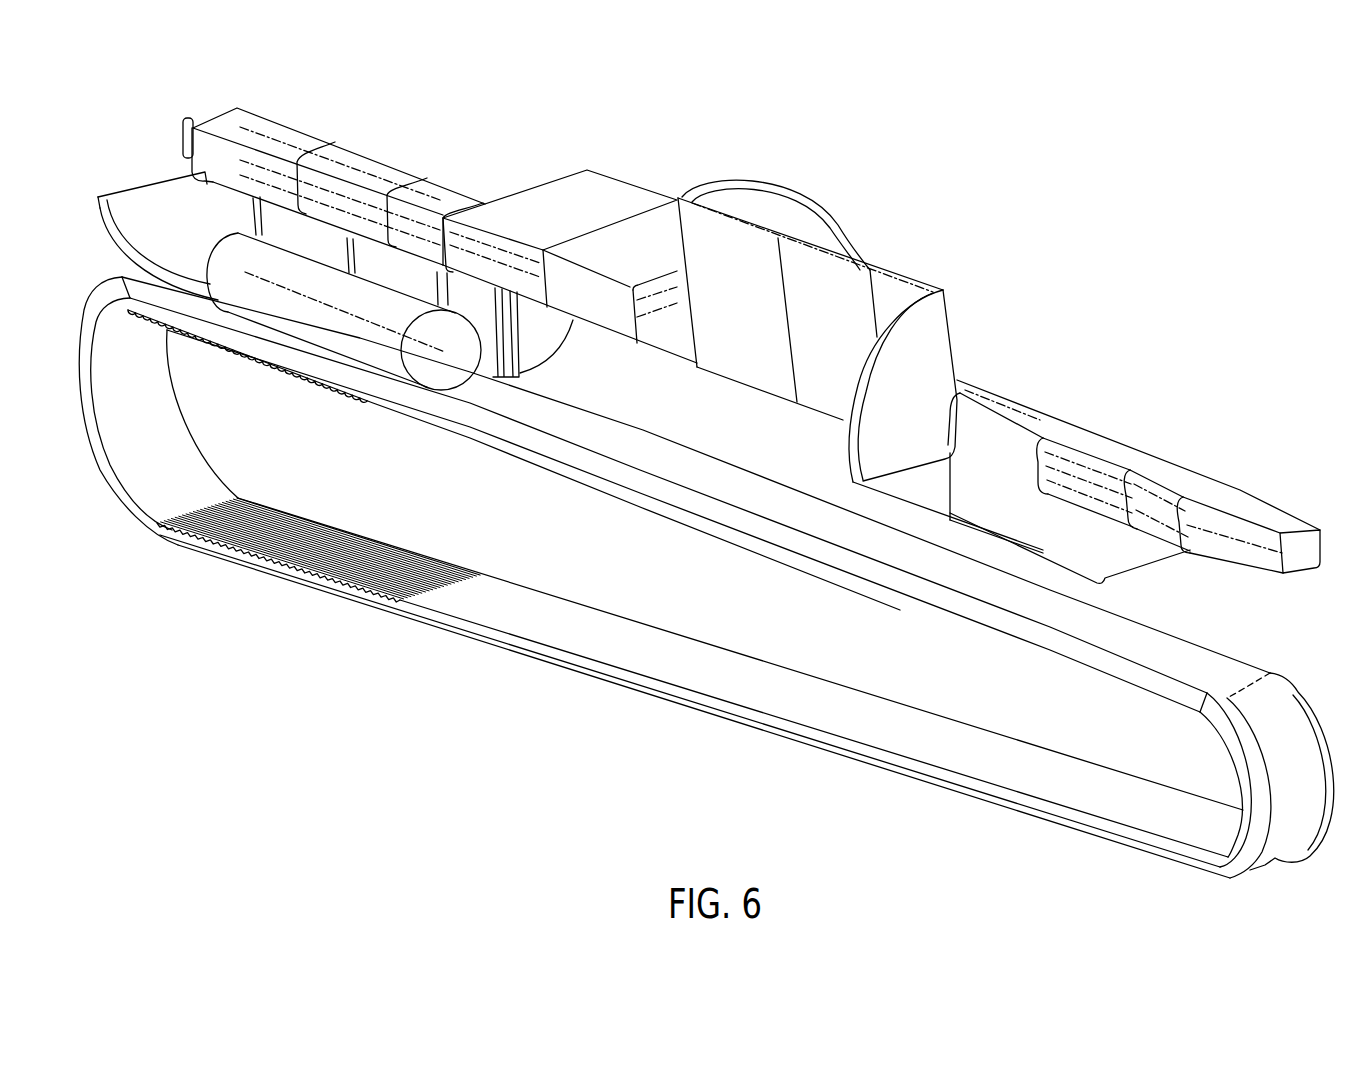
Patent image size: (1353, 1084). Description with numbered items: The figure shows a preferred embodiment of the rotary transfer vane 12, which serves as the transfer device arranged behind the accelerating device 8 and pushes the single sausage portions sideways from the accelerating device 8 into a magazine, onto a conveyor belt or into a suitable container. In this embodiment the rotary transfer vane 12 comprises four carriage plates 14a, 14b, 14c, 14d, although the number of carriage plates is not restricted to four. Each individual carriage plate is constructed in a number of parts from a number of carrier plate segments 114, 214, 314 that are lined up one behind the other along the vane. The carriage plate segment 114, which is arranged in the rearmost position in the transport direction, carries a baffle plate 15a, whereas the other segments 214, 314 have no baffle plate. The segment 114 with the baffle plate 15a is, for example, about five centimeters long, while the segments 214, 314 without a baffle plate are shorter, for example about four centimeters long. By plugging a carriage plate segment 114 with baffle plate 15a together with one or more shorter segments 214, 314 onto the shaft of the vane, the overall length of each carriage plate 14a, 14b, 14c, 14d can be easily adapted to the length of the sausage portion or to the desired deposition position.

The accelerating device 8 is at (1265, 672).
The rotary transfer vane 12 is at (1021, 196).
The carriage plate 14a is at (351, 216).
The carriage plate 14b is at (642, 180).
The carriage plate 14c is at (908, 257).
The carriage plate 14d is at (1155, 424).
The baffle plate 15a is at (128, 183).
The carriage plate segment 114 is at (282, 126).
The carriage plate segment 214 is at (373, 158).
The carriage plate segment 314 is at (447, 188).